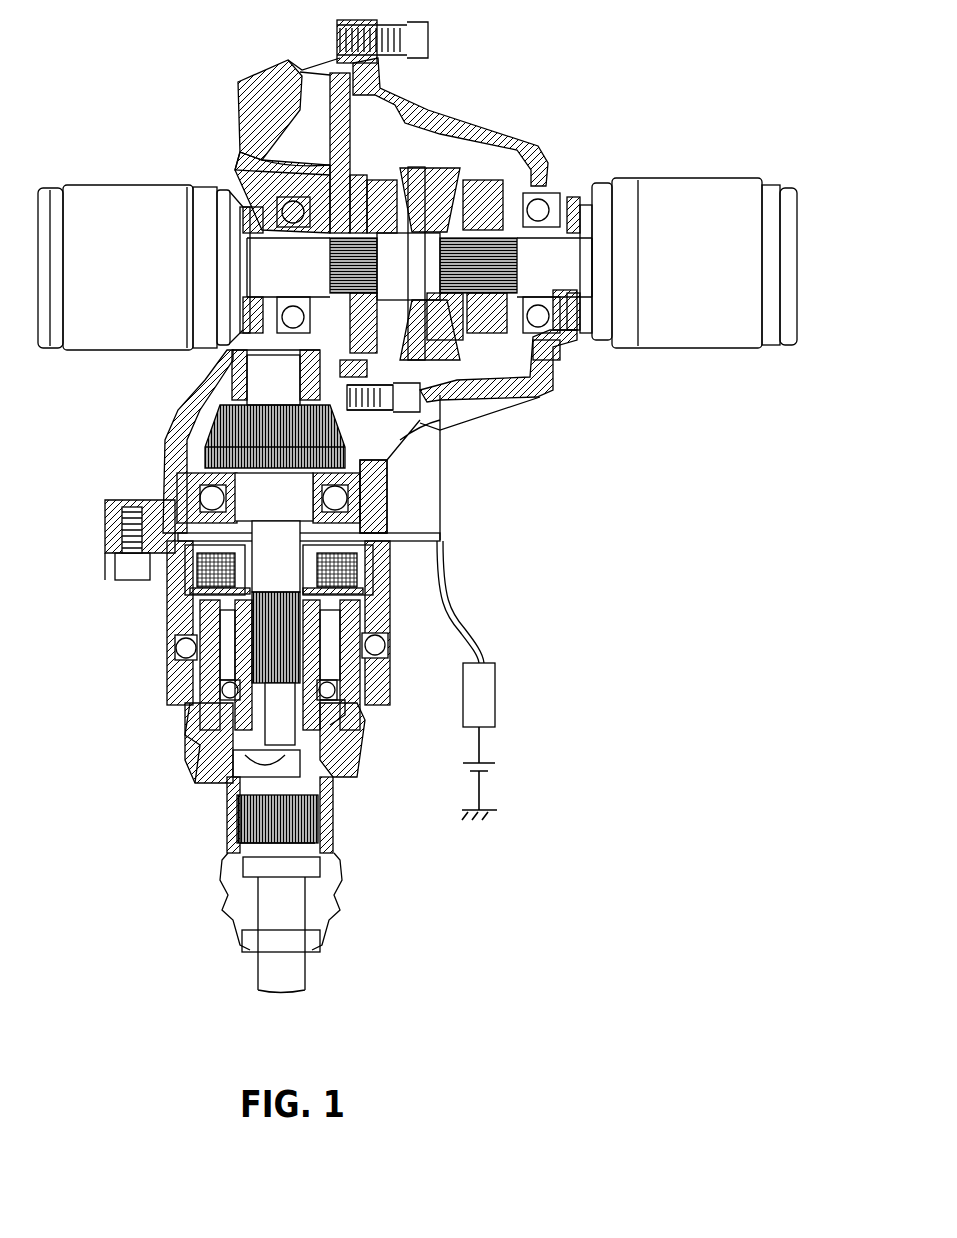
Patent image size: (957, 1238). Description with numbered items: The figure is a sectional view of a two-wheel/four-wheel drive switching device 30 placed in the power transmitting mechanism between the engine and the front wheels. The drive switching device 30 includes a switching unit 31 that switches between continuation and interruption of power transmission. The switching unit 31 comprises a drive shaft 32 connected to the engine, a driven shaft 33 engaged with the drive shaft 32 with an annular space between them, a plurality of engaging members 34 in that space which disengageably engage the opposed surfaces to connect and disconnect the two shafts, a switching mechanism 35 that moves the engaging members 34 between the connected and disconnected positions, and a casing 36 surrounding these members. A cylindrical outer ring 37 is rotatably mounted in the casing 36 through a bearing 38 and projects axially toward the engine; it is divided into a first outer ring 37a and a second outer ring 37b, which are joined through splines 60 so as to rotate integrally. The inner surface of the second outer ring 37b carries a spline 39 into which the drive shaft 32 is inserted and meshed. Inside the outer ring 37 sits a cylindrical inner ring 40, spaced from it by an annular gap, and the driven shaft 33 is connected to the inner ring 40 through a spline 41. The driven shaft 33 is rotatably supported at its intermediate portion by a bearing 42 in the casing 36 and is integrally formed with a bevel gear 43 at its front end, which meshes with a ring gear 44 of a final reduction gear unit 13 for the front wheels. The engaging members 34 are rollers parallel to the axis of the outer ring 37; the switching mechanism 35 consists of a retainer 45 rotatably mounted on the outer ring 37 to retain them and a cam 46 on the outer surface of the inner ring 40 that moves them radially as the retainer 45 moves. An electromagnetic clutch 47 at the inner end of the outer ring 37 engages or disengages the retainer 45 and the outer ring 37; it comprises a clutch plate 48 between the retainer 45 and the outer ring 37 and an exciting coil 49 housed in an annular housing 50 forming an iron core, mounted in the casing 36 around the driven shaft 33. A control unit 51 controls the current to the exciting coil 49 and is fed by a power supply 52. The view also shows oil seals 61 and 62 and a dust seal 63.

The final reduction gear unit 13 is at (497, 116).
The drive switching device 30 is at (405, 518).
The switching unit 31 is at (370, 710).
The drive shaft 32 is at (258, 978).
The driven shaft 33 is at (195, 528).
The engaging members 34 is at (382, 640).
The switching mechanism 35 is at (173, 632).
The casing 36 is at (175, 588).
The outer ring 37 is at (338, 870).
The first outer ring 37a is at (345, 788).
The second outer ring 37b is at (330, 830).
The bearing 38 is at (173, 648).
The spline 39 is at (232, 805).
The inner ring 40 is at (205, 743).
The spline 41 is at (265, 590).
The bearing 42 is at (390, 490).
The bevel gear 43 is at (212, 421).
The ring gear 44 is at (400, 430).
The retainer 45 is at (388, 600).
The cam 46 is at (378, 665).
The electromagnetic clutch 47 is at (476, 600).
The clutch plate 48 is at (392, 592).
The exciting coil 49 is at (392, 575).
The housing 50 is at (180, 600).
The control unit 51 is at (488, 705).
The power supply 52 is at (500, 765).
The splines 60 is at (355, 745).
The oil seal 61 is at (172, 512).
The oil seal 62 is at (225, 753).
The dust seal 63 is at (375, 700).